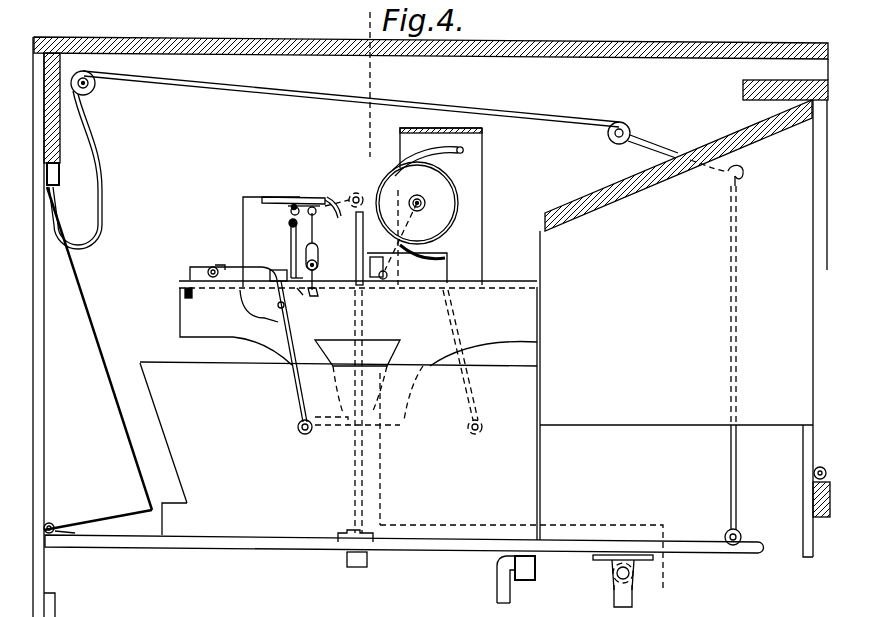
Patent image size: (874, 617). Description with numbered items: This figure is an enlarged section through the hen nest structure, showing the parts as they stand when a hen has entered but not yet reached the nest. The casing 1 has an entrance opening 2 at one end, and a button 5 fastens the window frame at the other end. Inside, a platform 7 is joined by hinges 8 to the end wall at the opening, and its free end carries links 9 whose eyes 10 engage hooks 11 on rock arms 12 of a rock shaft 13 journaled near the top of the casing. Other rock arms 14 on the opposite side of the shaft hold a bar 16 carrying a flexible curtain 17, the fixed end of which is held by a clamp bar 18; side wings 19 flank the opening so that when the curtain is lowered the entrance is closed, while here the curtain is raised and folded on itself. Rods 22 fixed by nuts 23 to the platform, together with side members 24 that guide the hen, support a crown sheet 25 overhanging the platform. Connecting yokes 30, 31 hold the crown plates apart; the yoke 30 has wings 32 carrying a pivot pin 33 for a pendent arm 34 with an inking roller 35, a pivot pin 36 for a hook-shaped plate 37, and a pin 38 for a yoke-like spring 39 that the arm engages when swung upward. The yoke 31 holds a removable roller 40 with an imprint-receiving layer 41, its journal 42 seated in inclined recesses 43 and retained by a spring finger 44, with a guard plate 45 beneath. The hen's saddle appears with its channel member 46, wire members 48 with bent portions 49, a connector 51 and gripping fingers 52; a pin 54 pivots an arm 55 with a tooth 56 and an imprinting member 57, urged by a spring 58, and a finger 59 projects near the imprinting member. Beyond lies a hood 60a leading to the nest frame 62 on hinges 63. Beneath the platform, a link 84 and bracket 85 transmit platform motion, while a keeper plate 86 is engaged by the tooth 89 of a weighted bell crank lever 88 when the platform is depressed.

The casing 1 is at (222, 37).
The opening 2 is at (33, 410).
The button 5 is at (512, 306).
The platform 7 is at (692, 541).
The hinges 8 is at (56, 525).
The links 9 is at (737, 292).
The eyes 10 is at (718, 192).
The hooks 11 is at (744, 177).
The rock arms 12 is at (651, 140).
The rock shaft 13 is at (618, 122).
The rock arms 14 is at (234, 95).
The bar 16 is at (90, 89).
The flexible curtain 17 is at (102, 157).
The clamp bar 18 is at (60, 185).
The side wings 19 is at (115, 361).
The rods 22 is at (367, 352).
The nuts 23 is at (352, 556).
The side members 24 is at (338, 413).
The crown sheet 25 is at (358, 298).
The connecting yoke 30 is at (243, 220).
The connecting yoke 31 is at (480, 270).
The wings 32 is at (300, 200).
The pivot pin 33 is at (327, 198).
The pendent arm 34 is at (317, 248).
The roller 35 is at (316, 296).
The pivot pin 36 is at (290, 207).
The hook-shaped plate 37 is at (291, 246).
The pin 38 is at (294, 206).
The yoke-like spring 39 is at (341, 203).
The roller 40 is at (448, 198).
The layer 41 is at (460, 208).
The journal 42 is at (420, 210).
The inclined recesses 43 is at (407, 187).
The spring finger 44 is at (437, 152).
The guard plate 45 is at (438, 238).
The channel member 46 is at (205, 290).
The wire members 48 is at (258, 314).
The bent portions 49 is at (184, 296).
The connector 51 is at (280, 306).
The gripping fingers 52 is at (297, 382).
The pin 54 is at (209, 270).
The arm 55 is at (252, 267).
The tooth 56 is at (303, 292).
The imprinting member 57 is at (298, 297).
The spring 58 is at (222, 265).
The finger 59 is at (385, 346).
The hood 60a is at (676, 320).
The frame 62 is at (814, 484).
The hinges 63 is at (813, 472).
The link 84 is at (615, 600).
The bracket 85 is at (612, 565).
The keeper plate 86 is at (532, 582).
The bell crank lever 88 is at (496, 595).
The tooth 89 is at (497, 566).